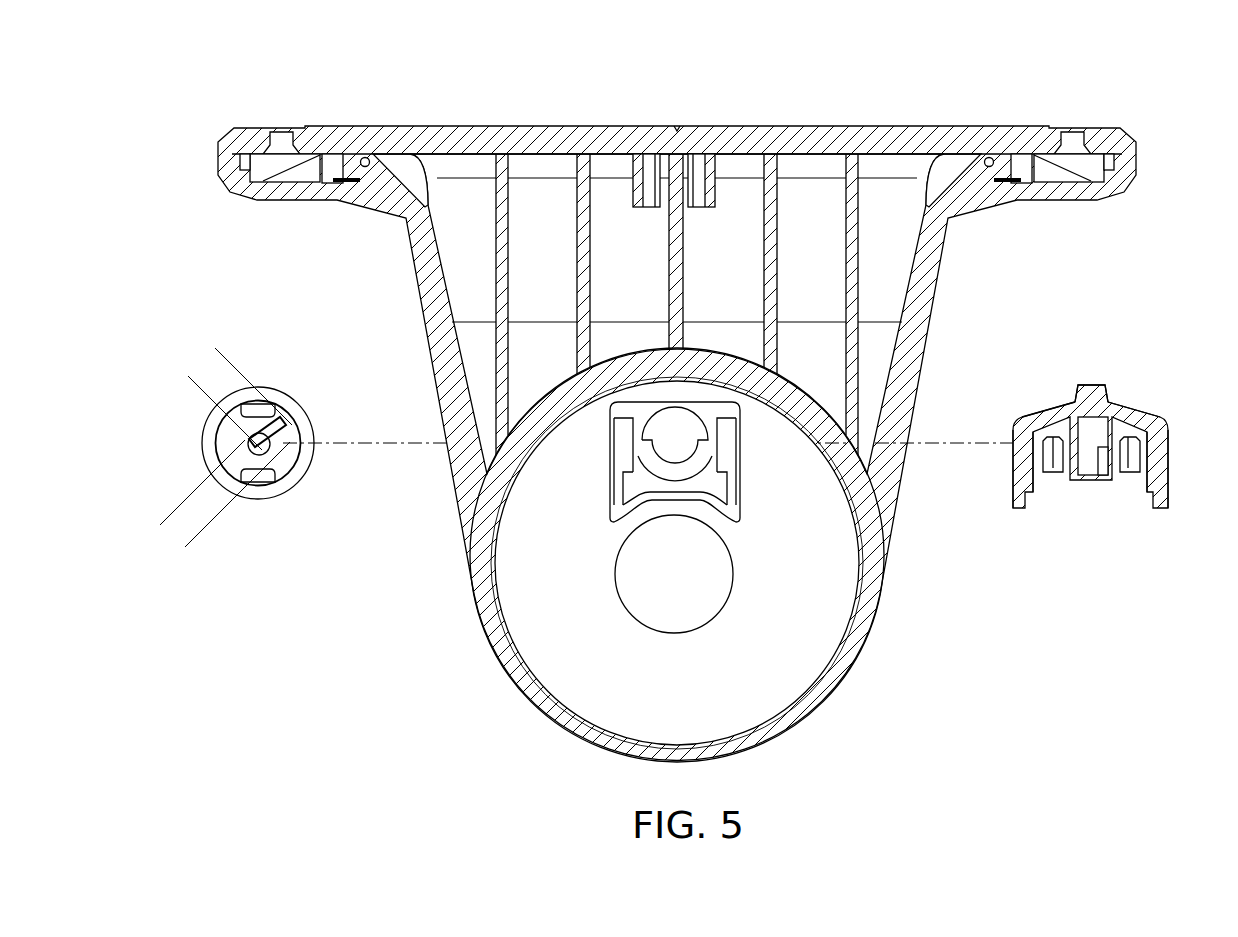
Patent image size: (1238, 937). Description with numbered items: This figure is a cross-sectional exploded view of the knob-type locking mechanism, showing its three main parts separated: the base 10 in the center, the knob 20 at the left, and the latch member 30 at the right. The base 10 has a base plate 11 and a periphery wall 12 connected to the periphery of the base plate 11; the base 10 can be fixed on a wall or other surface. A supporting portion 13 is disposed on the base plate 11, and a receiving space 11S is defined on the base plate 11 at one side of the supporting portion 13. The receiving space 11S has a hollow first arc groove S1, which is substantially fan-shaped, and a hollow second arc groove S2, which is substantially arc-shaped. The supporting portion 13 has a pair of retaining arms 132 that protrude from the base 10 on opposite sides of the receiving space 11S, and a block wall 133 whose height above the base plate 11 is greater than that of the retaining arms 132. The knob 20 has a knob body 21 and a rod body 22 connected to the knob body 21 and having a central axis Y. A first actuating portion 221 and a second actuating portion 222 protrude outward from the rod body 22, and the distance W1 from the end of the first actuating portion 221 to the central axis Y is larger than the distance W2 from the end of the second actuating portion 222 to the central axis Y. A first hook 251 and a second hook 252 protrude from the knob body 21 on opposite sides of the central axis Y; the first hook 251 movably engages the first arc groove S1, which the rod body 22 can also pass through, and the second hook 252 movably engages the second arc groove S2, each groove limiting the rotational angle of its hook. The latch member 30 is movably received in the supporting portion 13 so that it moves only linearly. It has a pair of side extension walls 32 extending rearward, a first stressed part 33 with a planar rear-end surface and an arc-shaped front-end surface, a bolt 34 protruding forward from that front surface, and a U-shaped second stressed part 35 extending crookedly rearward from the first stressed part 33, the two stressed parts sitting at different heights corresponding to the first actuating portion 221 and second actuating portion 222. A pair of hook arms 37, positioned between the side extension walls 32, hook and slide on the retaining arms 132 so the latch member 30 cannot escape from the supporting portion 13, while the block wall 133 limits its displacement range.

The base 10 is at (677, 450).
The base plate 11 is at (793, 655).
The periphery wall 12 is at (779, 725).
The supporting portion 13 is at (676, 530).
The retaining arms 132 is at (620, 490).
The block wall 133 is at (620, 456).
The receiving space 11S is at (616, 246).
The first arc groove S1 is at (673, 416).
The second arc groove S2 is at (650, 452).
The knob 20 is at (263, 471).
The knob body 21 is at (302, 483).
The rod body 22 is at (264, 436).
The first actuating portion 221 is at (286, 430).
The second actuating portion 222 is at (282, 444).
The first hook 251 is at (257, 406).
The second hook 252 is at (264, 474).
The distance from end of first actuating portion to central axis W1 is at (247, 333).
The distance from end of second actuating portion to central axis W2 is at (255, 524).
The central axis Y is at (257, 441).
The latch member 30 is at (1087, 462).
The side extension walls 32 is at (1032, 453).
The first stressed part 33 is at (1045, 412).
The bolt 34 is at (1090, 384).
The second stressed part 35 is at (1100, 466).
The hook arms 37 is at (1057, 465).